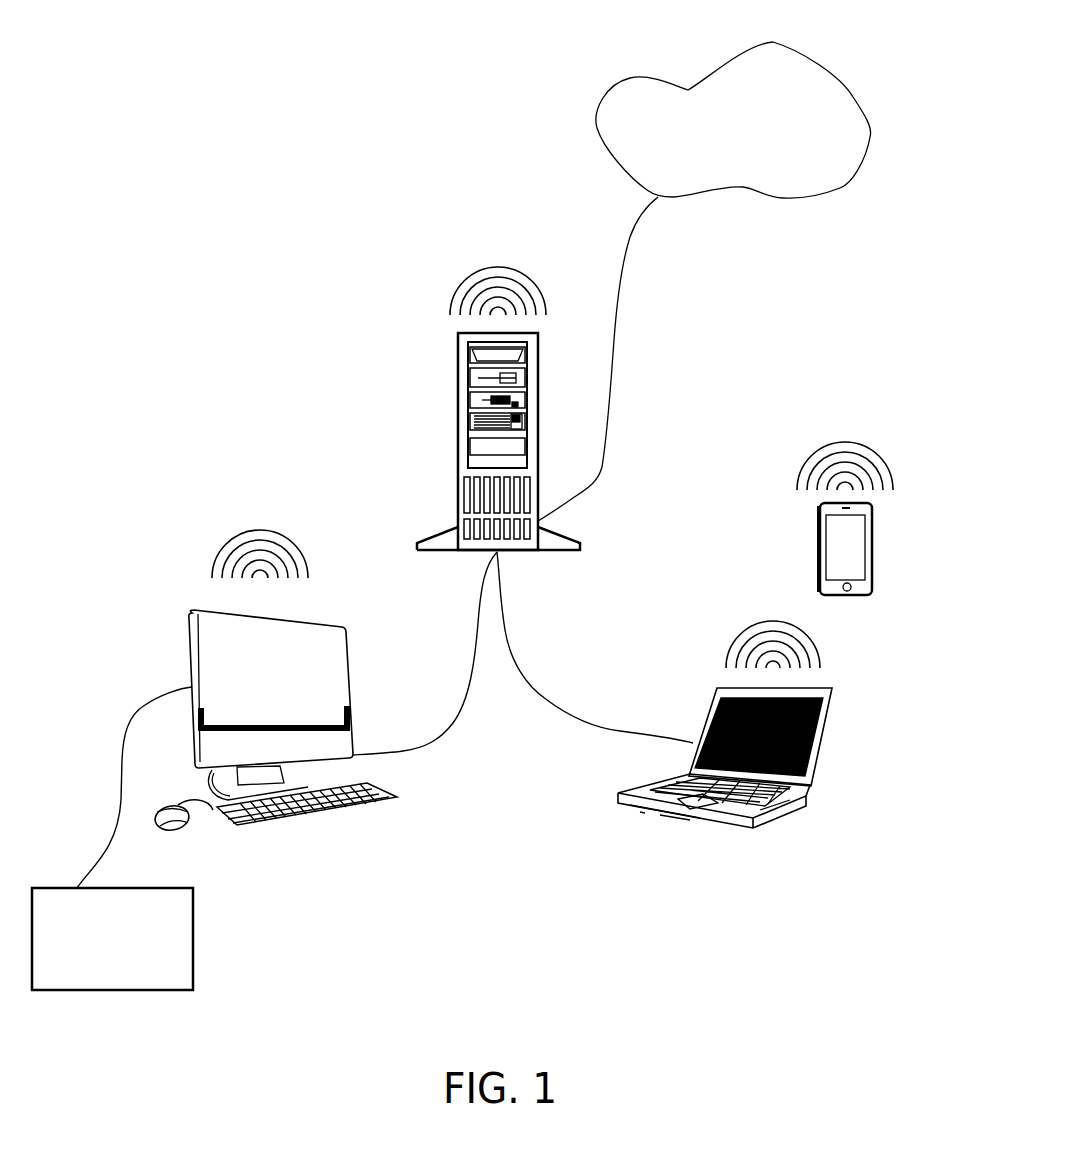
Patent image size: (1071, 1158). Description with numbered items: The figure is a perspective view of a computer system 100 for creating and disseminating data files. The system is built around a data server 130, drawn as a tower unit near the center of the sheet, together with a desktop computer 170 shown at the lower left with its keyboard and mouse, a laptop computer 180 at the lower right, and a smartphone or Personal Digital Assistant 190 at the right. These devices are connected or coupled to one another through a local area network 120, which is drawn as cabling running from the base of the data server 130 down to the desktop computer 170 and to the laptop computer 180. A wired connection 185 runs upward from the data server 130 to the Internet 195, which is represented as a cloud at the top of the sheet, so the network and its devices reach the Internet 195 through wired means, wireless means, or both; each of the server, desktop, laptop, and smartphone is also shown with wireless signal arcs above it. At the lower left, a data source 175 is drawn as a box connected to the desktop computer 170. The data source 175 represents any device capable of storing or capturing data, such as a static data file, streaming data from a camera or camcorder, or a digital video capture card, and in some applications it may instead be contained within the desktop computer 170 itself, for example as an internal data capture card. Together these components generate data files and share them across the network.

The computer system 100 is at (292, 52).
The local area network 120 is at (462, 710).
The data server 130 is at (462, 333).
The desktop computer 170 is at (203, 608).
The data source 175 is at (112, 883).
The laptop computer 180 is at (830, 688).
The wired connection 185 is at (620, 343).
The smartphone 190 is at (873, 556).
The Internet 195 is at (820, 63).